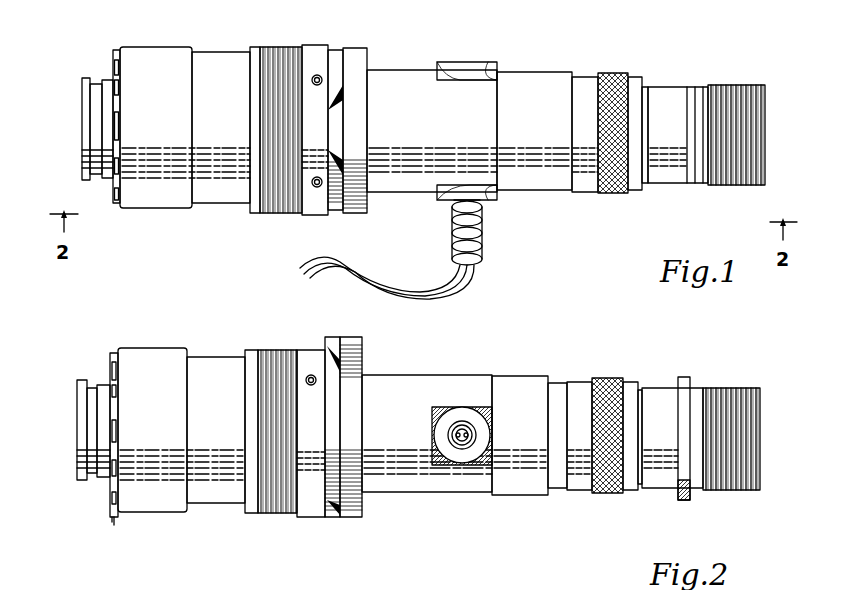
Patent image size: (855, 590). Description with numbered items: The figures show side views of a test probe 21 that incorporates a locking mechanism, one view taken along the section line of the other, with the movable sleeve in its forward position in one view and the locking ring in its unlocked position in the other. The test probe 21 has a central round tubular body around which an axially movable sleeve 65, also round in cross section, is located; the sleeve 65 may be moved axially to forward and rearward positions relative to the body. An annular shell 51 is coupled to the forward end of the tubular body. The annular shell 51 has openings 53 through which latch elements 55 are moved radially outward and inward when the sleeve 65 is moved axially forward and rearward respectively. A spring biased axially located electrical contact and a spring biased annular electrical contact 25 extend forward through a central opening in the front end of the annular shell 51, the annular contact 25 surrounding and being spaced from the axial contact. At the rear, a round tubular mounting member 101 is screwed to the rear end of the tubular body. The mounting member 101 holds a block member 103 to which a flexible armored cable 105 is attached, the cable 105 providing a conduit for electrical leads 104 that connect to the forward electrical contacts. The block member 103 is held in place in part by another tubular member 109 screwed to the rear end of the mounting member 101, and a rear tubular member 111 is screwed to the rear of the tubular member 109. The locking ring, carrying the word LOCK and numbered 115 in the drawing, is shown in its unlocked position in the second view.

In FIG. 1, the test probe 21 is at (436, 42).
In FIG. 2, the test probe 21 is at (417, 360).
In FIG. 1, the annular electrical contact 25 is at (84, 78).
In FIG. 2, the annular electrical contact 25 is at (76, 416).
In FIG. 1, the annular shell 51 is at (168, 50).
In FIG. 2, the annular shell 51 is at (175, 348).
In FIG. 1, the openings 53 is at (114, 192).
In FIG. 2, the openings 53 is at (112, 500).
In FIG. 2, the latch elements 55 is at (112, 513).
In FIG. 1, the axially movable sleeve 65 is at (322, 44).
In FIG. 2, the axially movable sleeve 65 is at (320, 350).
In FIG. 1, the tubular mounting member 101 is at (408, 192).
In FIG. 2, the tubular mounting member 101 is at (393, 487).
In FIG. 1, the block member 103 is at (472, 62).
In FIG. 2, the block member 103 is at (470, 407).
In FIG. 1, the electrical leads 104 is at (390, 282).
In FIG. 1, the flexible armored cable 105 is at (484, 245).
In FIG. 2, the flexible armored cable 105 is at (462, 462).
In FIG. 1, the tubular member 109 is at (523, 73).
In FIG. 2, the tubular member 109 is at (520, 375).
In FIG. 1, the rear tubular member 111 is at (730, 85).
In FIG. 2, the rear tubular member 111 is at (712, 388).
In FIG. 1, the lock ring 115 is at (350, 48).
In FIG. 2, the lock ring 115 is at (343, 427).